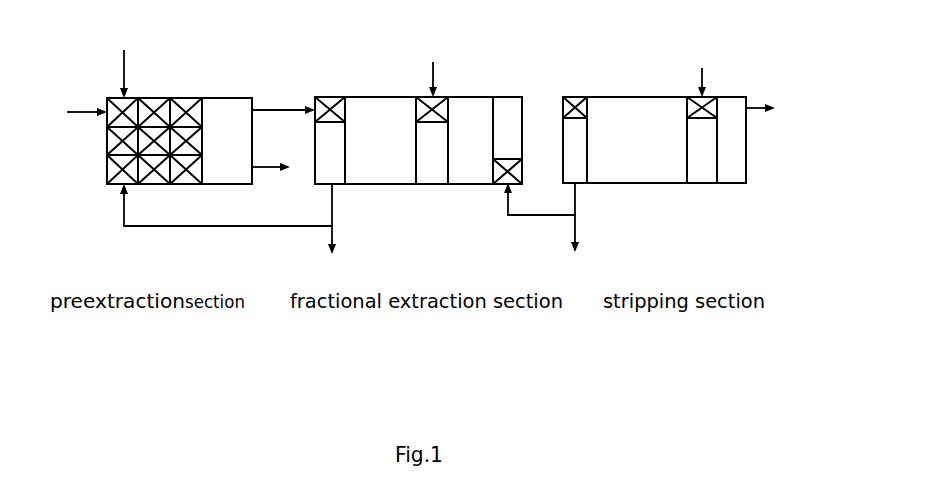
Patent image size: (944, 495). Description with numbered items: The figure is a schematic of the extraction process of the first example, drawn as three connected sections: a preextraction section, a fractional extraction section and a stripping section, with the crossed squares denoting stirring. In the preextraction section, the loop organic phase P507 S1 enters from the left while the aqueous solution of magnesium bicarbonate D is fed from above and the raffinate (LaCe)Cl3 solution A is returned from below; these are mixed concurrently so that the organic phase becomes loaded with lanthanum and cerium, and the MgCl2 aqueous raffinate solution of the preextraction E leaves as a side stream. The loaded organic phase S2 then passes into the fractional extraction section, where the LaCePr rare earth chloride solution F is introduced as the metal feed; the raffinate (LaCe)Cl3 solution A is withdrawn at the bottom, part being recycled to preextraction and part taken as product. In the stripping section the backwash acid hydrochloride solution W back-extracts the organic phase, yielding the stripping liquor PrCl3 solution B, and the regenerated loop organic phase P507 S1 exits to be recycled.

The loop organic phase P507 S1 is at (417, 109).
The loaded organic phase S2 is at (283, 89).
The aqueous solution of magnesium bicarbonate D is at (125, 56).
The MgCl2 aqueous raffinate solution of the preextraction E is at (279, 167).
The raffinate (LaCe)Cl3 solution A is at (228, 232).
The LaCePr rare earth chloride solution F is at (430, 55).
The stripping liquor PrCl3 solution B is at (541, 231).
The backwash acid hydrochloride solution W is at (703, 57).